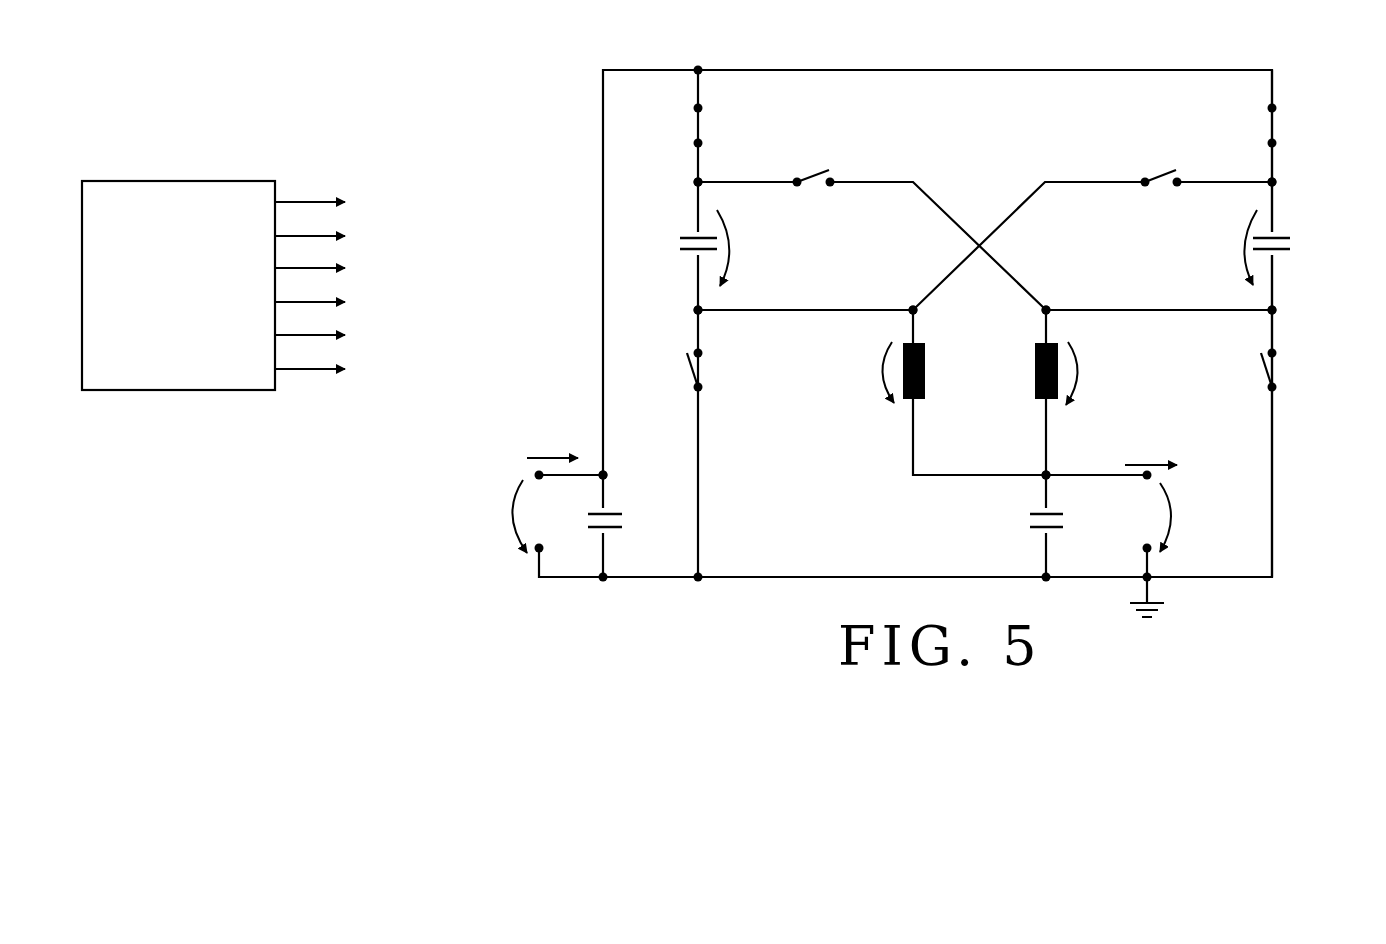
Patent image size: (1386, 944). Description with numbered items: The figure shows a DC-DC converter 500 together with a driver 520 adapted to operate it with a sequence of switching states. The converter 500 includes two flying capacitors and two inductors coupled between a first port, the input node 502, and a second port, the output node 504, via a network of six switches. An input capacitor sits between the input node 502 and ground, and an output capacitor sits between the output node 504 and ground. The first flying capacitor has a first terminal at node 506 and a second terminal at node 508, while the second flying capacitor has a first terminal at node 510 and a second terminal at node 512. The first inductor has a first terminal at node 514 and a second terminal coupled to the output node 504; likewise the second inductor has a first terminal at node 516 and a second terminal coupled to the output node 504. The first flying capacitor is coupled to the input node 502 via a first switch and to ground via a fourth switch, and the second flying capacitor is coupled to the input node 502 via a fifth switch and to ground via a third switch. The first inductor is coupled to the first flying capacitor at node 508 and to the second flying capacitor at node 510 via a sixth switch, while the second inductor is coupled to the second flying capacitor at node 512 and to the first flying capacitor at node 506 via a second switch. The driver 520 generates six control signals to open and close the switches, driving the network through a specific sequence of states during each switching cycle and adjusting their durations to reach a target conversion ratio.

The DC-DC converter 500 is at (552, 57).
The input node 502 is at (603, 475).
The output node 504 is at (1046, 475).
The node 506 is at (698, 182).
The node 508 is at (698, 310).
The node 510 is at (1272, 182).
The node 512 is at (1272, 310).
The node 514 is at (913, 310).
The node 516 is at (1046, 310).
The driver 520 is at (203, 181).